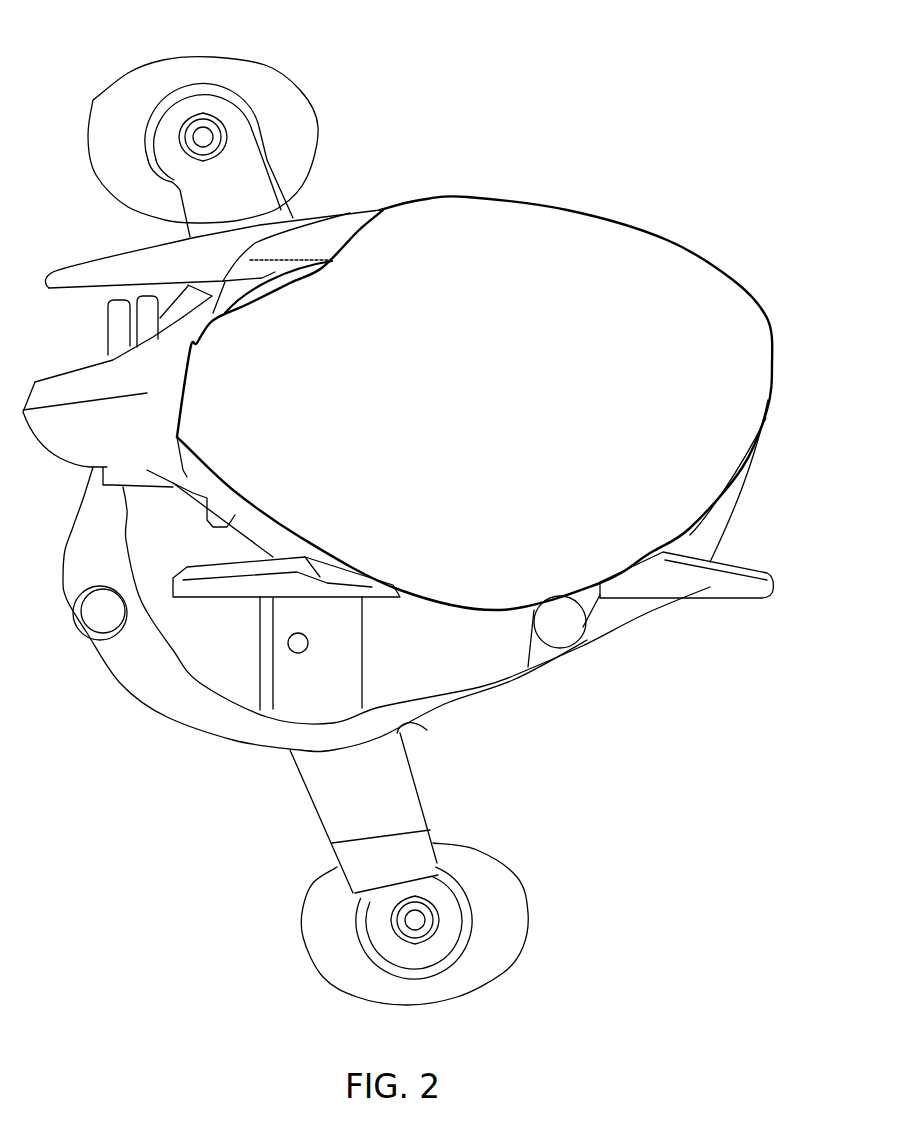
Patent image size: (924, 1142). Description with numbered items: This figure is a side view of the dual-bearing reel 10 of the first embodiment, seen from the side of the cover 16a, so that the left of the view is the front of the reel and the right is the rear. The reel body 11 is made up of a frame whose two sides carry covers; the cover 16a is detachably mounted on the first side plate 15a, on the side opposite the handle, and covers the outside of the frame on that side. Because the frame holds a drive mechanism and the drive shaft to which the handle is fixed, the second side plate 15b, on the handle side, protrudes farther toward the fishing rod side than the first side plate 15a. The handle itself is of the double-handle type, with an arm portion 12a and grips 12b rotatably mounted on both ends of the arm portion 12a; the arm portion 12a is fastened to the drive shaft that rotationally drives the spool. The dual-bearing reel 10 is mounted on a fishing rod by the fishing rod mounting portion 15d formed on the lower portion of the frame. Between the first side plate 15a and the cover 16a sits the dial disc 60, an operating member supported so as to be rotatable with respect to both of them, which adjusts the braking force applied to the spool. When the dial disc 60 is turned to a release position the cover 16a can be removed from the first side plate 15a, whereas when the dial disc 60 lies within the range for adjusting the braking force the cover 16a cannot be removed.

The dual-bearing reel 10 is at (543, 128).
The reel body 11 is at (467, 178).
The arm portion 12a is at (412, 790).
The grips 12b is at (137, 80).
The first side plate 15a is at (350, 222).
The second side plate 15b is at (200, 660).
The fishing rod mounting portion 15d is at (730, 600).
The cover 16a is at (597, 233).
The dial disc 60 is at (293, 267).